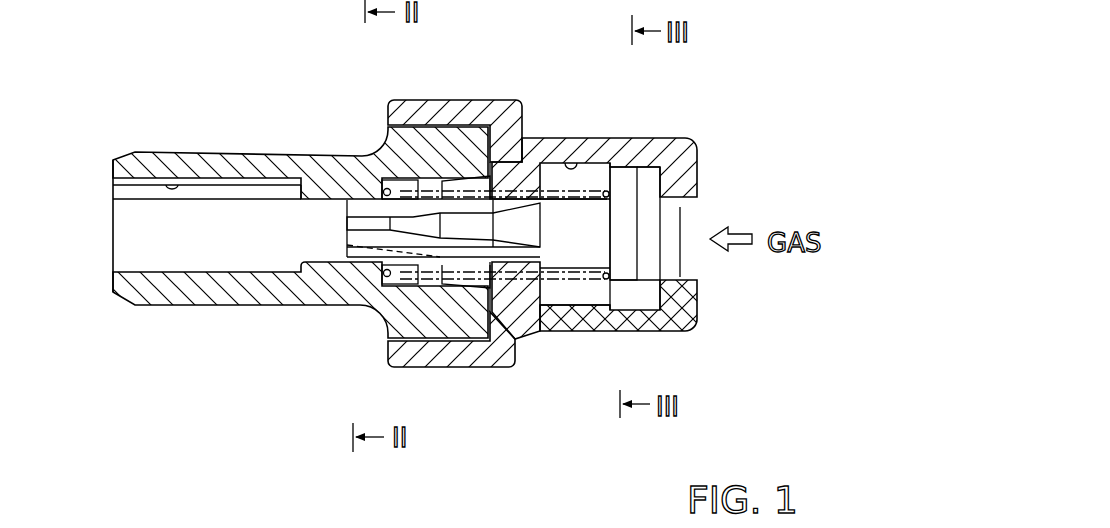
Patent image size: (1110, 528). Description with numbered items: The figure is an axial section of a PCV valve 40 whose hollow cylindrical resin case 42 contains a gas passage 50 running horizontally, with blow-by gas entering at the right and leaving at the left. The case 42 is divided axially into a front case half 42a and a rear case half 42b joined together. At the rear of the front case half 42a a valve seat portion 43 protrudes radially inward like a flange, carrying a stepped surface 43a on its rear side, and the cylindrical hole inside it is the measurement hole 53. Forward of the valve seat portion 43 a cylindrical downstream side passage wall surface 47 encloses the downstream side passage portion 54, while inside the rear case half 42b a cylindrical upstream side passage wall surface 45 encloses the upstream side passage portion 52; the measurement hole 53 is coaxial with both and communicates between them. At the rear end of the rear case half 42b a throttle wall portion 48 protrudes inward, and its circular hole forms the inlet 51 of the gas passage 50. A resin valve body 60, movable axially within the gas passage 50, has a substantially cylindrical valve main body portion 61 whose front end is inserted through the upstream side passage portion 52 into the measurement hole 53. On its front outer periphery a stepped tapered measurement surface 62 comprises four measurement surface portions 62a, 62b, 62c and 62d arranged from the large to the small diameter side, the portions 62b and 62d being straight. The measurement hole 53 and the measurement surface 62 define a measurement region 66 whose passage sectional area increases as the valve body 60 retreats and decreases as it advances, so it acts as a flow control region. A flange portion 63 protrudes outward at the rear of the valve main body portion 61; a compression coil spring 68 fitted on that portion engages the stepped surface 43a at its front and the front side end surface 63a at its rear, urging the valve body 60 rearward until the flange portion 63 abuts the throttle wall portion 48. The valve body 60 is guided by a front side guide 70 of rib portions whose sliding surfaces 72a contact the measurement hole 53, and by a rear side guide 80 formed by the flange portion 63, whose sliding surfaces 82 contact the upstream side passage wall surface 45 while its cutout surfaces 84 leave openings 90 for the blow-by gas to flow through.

The PCV valve 40 is at (538, 95).
The case 42 is at (458, 97).
The front case half 42a is at (248, 167).
The rear case half 42b is at (598, 150).
The valve seat portion 43 is at (327, 190).
The stepped surface 43a is at (385, 264).
The upstream side passage wall surface 45 is at (583, 165).
The downstream side passage wall surface 47 is at (169, 183).
The throttle wall portion 48 is at (670, 299).
The gas passage 50 is at (263, 249).
The inlet 51 is at (667, 213).
The upstream side passage portion 52 is at (524, 294).
The measurement hole 53 is at (301, 265).
The downstream side passage portion 54 is at (201, 236).
The valve body 60 is at (608, 281).
The valve main body portion 61 is at (573, 260).
The measurement surface 62 is at (427, 218).
The measurement surface portion 62a is at (520, 218).
The measurement surface portion 62b is at (490, 178).
The measurement surface portion 62c is at (437, 230).
The measurement surface portion 62d is at (370, 223).
The flange portion 63 is at (633, 193).
The front side end surface 63a is at (642, 166).
The measurement region 66 is at (347, 262).
The spring 68 is at (619, 286).
The front side guide 70 is at (390, 181).
The sliding surfaces 72a is at (497, 296).
The rear side guide 80 is at (697, 151).
The sliding surfaces 82 is at (642, 174).
The cutout surfaces 84 is at (623, 247).
The openings 90 is at (660, 304).